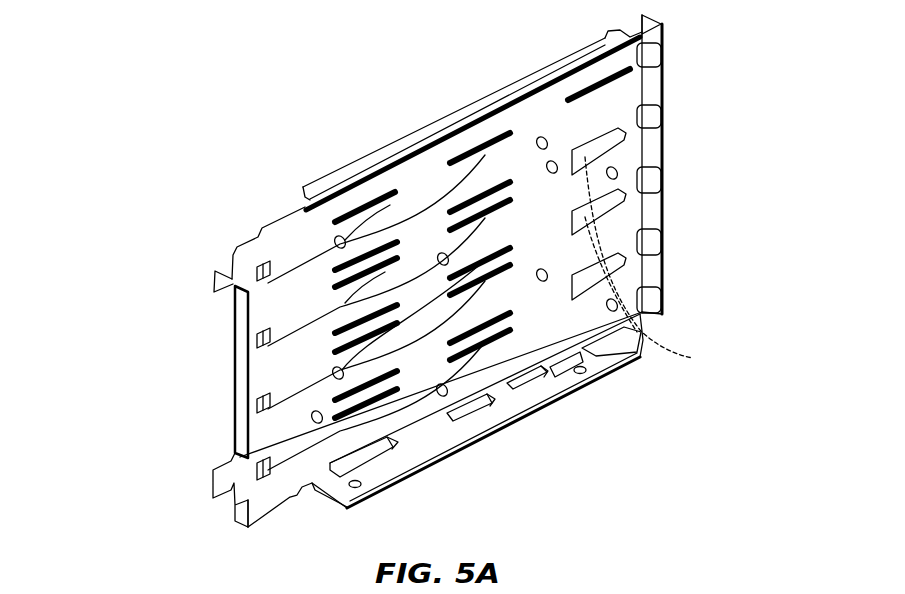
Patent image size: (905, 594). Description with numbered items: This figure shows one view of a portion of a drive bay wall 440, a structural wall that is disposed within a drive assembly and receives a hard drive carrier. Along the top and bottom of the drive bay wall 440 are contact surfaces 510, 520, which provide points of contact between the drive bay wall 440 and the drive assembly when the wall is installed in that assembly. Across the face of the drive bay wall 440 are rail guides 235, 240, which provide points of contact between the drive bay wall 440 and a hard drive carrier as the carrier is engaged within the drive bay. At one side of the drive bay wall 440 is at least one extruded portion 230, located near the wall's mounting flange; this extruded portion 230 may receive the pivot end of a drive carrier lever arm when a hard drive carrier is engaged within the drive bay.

The drive bay wall 440 is at (482, 86).
The contact surface 510 is at (357, 166).
The contact surface 520 is at (478, 445).
The extruded portion 230 is at (663, 310).
The rail guide 235 is at (618, 318).
The rail guide 240 is at (250, 285).